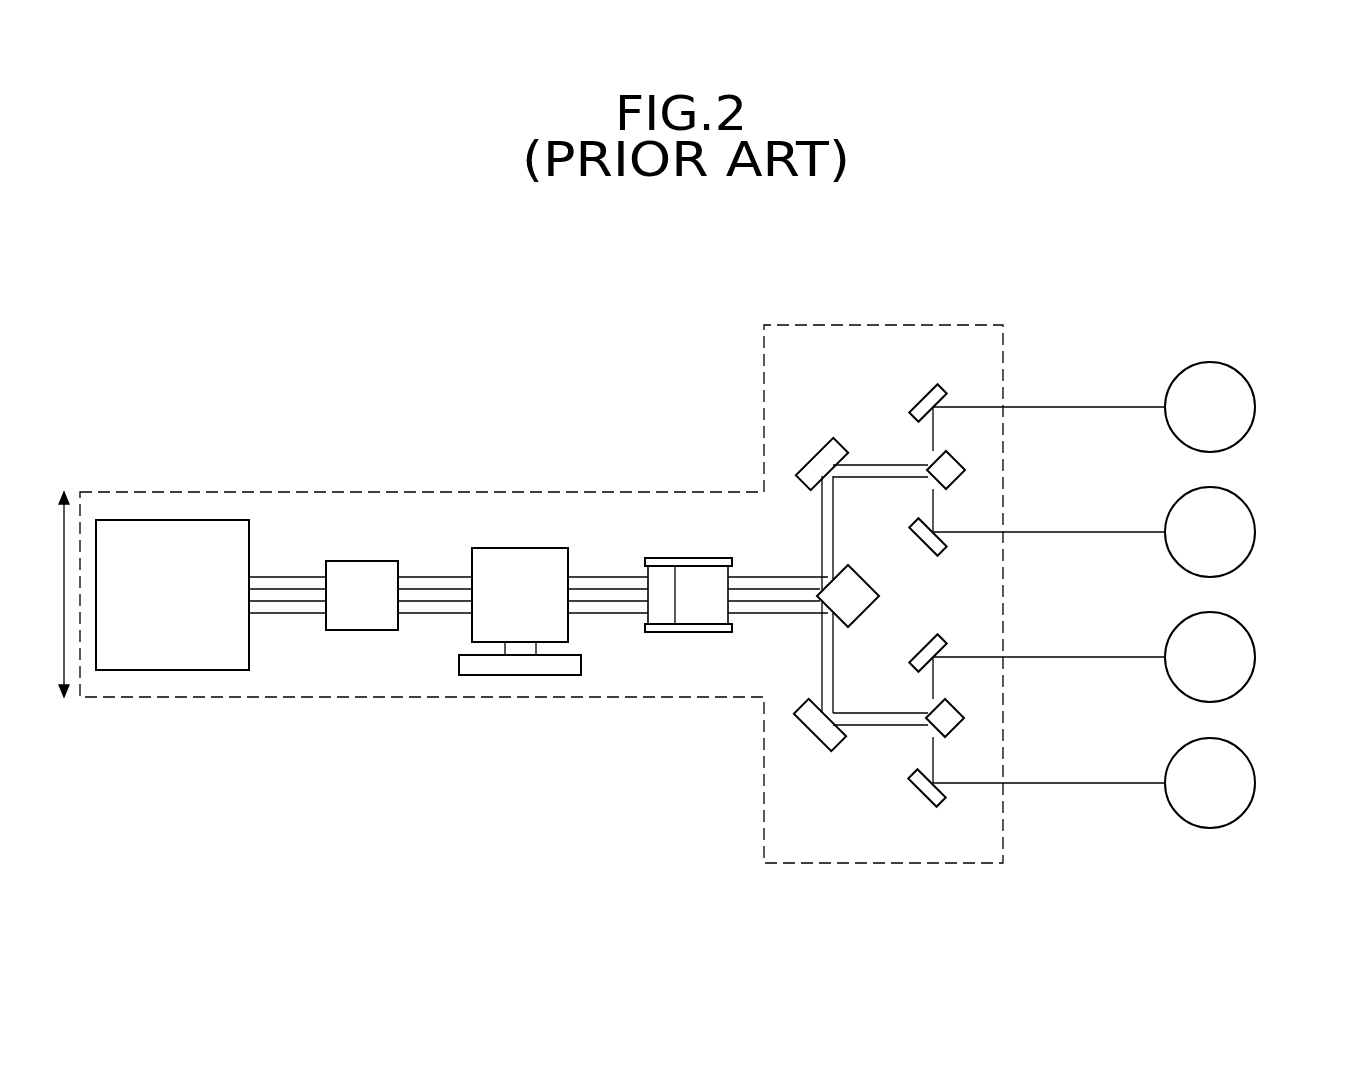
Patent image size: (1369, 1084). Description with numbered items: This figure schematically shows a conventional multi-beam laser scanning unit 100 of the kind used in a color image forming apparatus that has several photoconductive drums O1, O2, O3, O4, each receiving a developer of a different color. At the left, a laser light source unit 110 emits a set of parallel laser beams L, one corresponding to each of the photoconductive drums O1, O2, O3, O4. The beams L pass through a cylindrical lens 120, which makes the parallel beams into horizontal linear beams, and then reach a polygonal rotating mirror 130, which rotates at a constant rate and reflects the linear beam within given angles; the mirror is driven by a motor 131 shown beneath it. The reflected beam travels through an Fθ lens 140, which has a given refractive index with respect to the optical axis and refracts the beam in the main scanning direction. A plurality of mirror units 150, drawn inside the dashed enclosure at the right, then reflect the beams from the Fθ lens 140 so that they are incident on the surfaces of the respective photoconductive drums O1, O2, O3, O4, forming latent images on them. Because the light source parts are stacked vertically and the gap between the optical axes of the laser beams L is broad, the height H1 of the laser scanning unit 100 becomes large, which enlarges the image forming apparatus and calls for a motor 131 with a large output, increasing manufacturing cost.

The multi-beam laser scanning unit 100 is at (417, 262).
The laser light source unit 110 is at (173, 520).
The laser beams L is at (310, 612).
The cylindrical lens 120 is at (362, 561).
The polygonal rotating mirror 130 is at (520, 548).
The motor 131 is at (520, 675).
The Fθ lens 140 is at (687, 558).
The mirror units 150 is at (873, 381).
The height of the laser scanning unit H1 is at (51, 594).
The photoconductive drum O1 is at (1255, 407).
The photoconductive drum O2 is at (1255, 532).
The photoconductive drum O3 is at (1255, 657).
The photoconductive drum O4 is at (1255, 783).